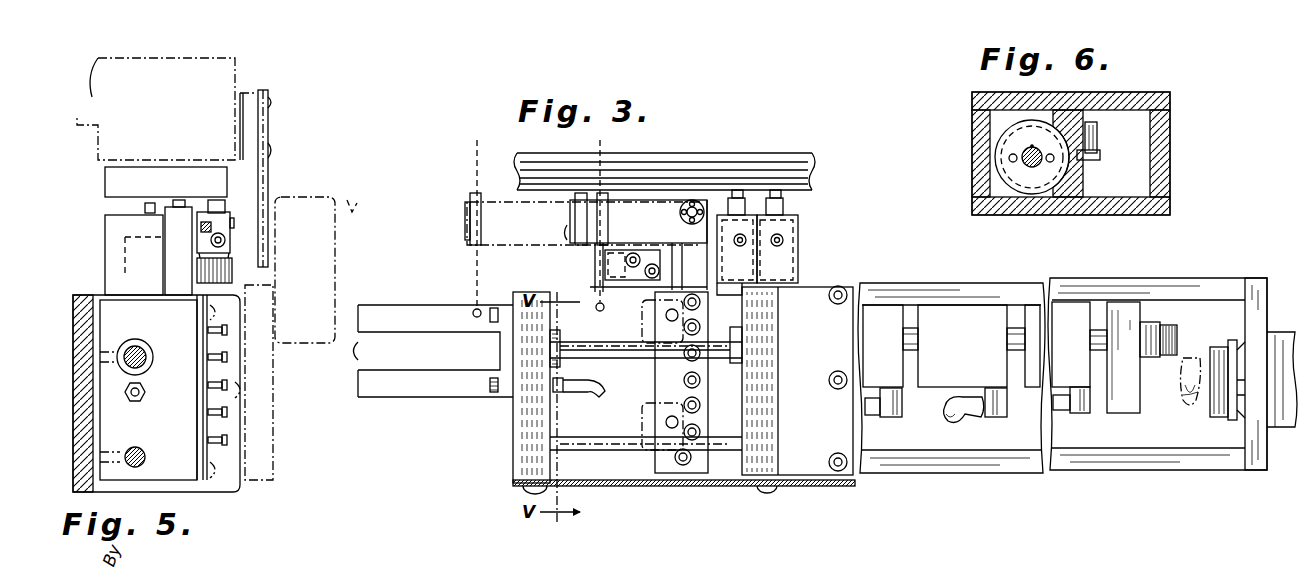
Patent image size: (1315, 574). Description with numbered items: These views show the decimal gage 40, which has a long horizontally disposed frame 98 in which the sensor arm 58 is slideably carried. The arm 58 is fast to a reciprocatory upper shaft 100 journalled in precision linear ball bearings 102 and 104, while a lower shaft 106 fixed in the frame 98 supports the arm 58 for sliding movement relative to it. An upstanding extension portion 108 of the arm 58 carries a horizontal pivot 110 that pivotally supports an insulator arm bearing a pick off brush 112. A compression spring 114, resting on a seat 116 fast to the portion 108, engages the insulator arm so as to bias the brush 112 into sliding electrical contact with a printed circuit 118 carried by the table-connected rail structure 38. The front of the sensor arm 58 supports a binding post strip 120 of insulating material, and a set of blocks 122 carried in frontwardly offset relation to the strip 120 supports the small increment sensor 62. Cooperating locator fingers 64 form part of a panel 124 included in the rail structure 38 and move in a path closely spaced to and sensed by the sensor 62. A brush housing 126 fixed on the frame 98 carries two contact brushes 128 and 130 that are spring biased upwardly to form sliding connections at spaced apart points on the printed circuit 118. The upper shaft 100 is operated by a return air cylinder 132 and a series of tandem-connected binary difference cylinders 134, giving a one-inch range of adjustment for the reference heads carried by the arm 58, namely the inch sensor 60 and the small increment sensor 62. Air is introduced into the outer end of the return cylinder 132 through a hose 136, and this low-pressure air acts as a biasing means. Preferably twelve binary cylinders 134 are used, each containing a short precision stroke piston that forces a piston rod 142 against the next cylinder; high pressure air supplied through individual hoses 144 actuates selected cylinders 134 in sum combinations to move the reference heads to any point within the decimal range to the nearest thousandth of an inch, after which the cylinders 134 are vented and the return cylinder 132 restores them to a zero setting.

In FIG. 5, the rail structure 38 is at (91, 95).
In FIG. 3, the rail structure 38 is at (798, 151).
In FIG. 5, the decimal gage 40 is at (228, 493).
In FIG. 3, the decimal gage 40 is at (956, 478).
In FIG. 6, the decimal gage 40 is at (1068, 216).
In FIG. 5, the sensor arm 58 is at (184, 436).
In FIG. 3, the sensor arm 58 is at (660, 468).
In FIG. 3, the inch sensor 60 is at (589, 251).
In FIG. 5, the small increment sensor 62 is at (349, 200).
In FIG. 5, the locator fingers 64 is at (276, 195).
In FIG. 5, the frame 98 is at (85, 414).
In FIG. 3, the frame 98 is at (523, 436).
In FIG. 6, the frame 98 is at (975, 160).
In FIG. 5, the upper shaft 100 is at (142, 343).
In FIG. 3, the upper shaft 100 is at (618, 352).
In FIG. 3, the linear ball bearing 102 is at (553, 341).
In FIG. 3, the linear ball bearing 104 is at (741, 330).
In FIG. 5, the lower shaft 106 is at (146, 459).
In FIG. 3, the lower shaft 106 is at (728, 447).
In FIG. 5, the extension portion 108 is at (185, 207).
In FIG. 3, the extension portion 108 is at (698, 265).
In FIG. 5, the horizontal pivot 110 is at (233, 222).
In FIG. 3, the horizontal pivot 110 is at (692, 200).
In FIG. 5, the pick off brush 112 is at (215, 200).
In FIG. 3, the pick off brush 112 is at (581, 193).
In FIG. 3, the compression spring 114 is at (612, 249).
In FIG. 3, the seat 116 is at (631, 258).
In FIG. 5, the printed circuit 118 is at (105, 195).
In FIG. 3, the printed circuit 118 is at (522, 193).
In FIG. 5, the binding post strip 120 is at (214, 470).
In FIG. 3, the binding post strip 120 is at (698, 463).
In FIG. 5, the blocks 122 is at (258, 380).
In FIG. 3, the blocks 122 is at (650, 323).
In FIG. 5, the panel 124 is at (271, 92).
In FIG. 5, the brush housing 126 is at (125, 250).
In FIG. 3, the brush housing 126 is at (799, 233).
In FIG. 5, the contact brush 128 is at (178, 200).
In FIG. 3, the contact brush 128 is at (736, 190).
In FIG. 5, the contact brush 130 is at (149, 203).
In FIG. 3, the contact brush 130 is at (775, 190).
In FIG. 3, the return air cylinder 132 is at (449, 388).
In FIG. 3, the binary difference cylinders 134 is at (1065, 313).
In FIG. 6, the binary difference cylinders 134 is at (1005, 183).
In FIG. 3, the hose 136 is at (583, 393).
In FIG. 6, the piston rod 142 is at (1030, 148).
In FIG. 3, the hoses 144 is at (963, 412).
In FIG. 6, the hoses 144 is at (1098, 130).